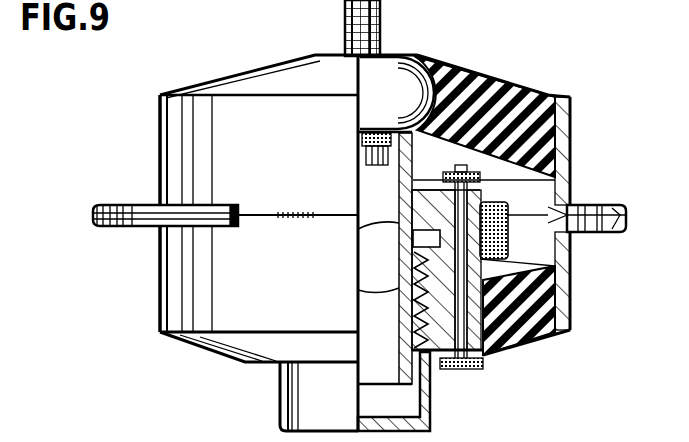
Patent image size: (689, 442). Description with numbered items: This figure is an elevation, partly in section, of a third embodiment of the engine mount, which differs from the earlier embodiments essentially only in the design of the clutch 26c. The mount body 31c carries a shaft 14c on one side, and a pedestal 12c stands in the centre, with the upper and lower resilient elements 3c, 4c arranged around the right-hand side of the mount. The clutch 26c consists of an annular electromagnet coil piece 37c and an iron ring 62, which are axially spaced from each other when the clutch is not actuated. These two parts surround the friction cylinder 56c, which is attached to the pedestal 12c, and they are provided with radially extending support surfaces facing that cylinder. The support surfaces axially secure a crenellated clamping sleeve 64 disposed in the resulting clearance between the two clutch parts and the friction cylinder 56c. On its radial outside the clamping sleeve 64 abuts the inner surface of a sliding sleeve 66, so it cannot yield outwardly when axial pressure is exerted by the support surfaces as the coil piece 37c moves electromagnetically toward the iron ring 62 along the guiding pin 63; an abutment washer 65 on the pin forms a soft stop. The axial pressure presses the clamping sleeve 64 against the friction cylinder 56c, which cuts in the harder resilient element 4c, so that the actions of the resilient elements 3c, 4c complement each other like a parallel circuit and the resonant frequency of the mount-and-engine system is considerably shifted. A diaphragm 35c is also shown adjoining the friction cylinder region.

The housing 31c is at (182, 118).
The shaft 14c is at (102, 205).
The pedestal 12c is at (388, 73).
The upper resilient element 3c is at (513, 97).
The lower resilient element 4c is at (533, 341).
The abutment washer 65 is at (412, 190).
The clutch 26c is at (384, 306).
The upper diaphragm 35c is at (358, 228).
The friction cylinder 56c is at (358, 288).
The clamping sleeve 64 is at (413, 238).
The sliding sleeve 66 is at (413, 326).
The guiding pin 63 is at (505, 268).
The iron ring 62 is at (473, 342).
The annular electromagnet coil piece 37c is at (492, 204).